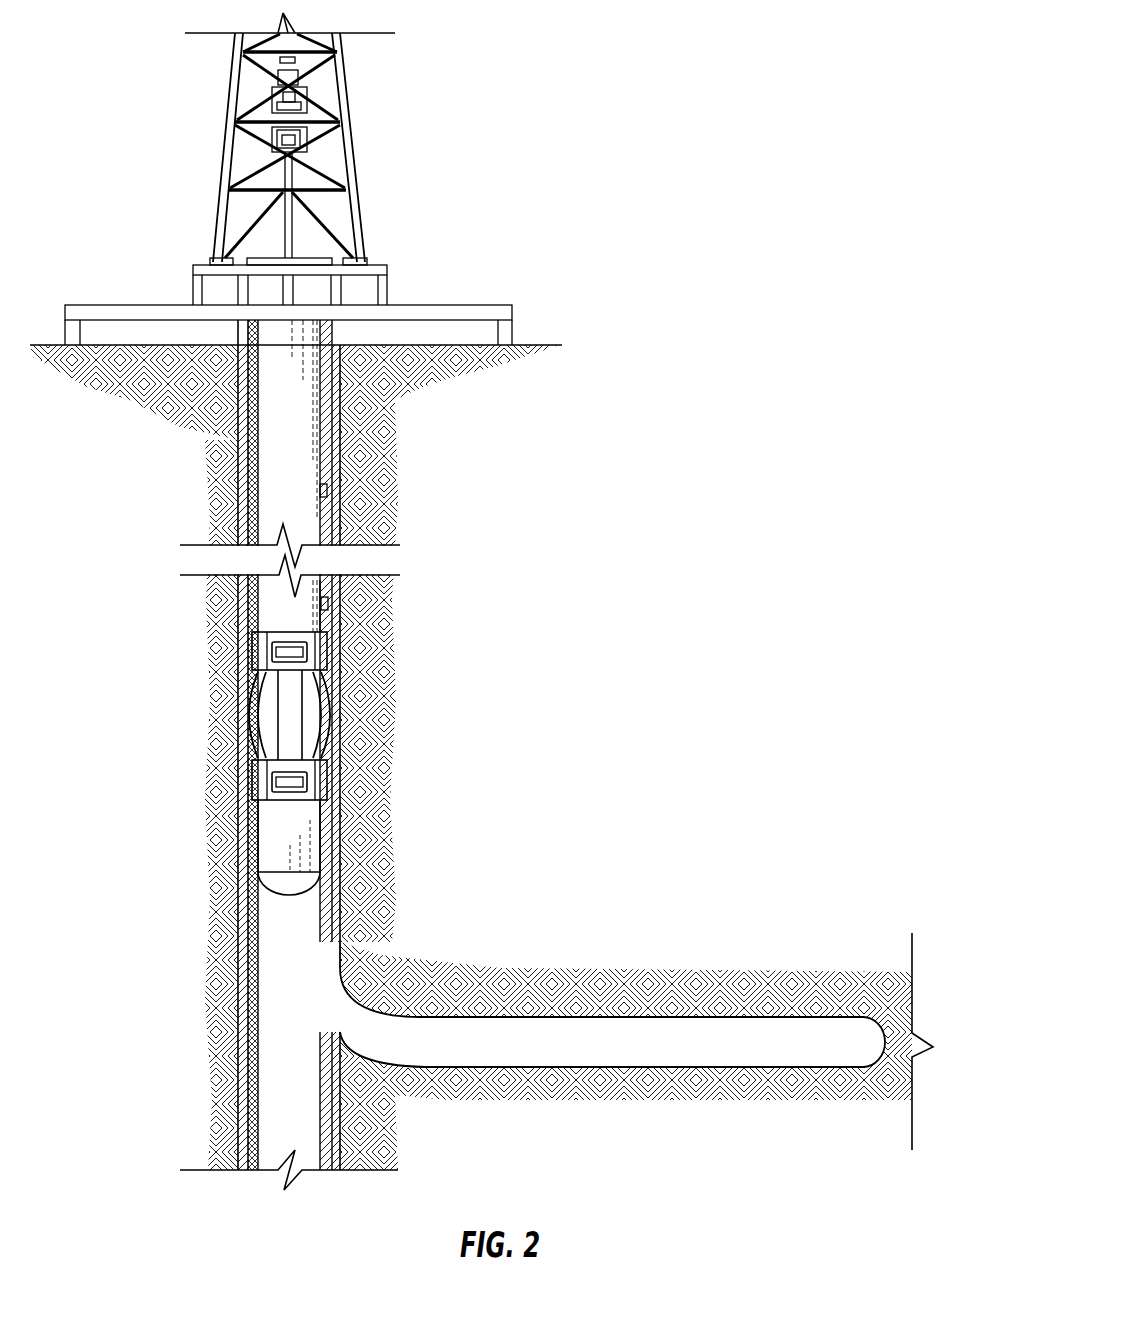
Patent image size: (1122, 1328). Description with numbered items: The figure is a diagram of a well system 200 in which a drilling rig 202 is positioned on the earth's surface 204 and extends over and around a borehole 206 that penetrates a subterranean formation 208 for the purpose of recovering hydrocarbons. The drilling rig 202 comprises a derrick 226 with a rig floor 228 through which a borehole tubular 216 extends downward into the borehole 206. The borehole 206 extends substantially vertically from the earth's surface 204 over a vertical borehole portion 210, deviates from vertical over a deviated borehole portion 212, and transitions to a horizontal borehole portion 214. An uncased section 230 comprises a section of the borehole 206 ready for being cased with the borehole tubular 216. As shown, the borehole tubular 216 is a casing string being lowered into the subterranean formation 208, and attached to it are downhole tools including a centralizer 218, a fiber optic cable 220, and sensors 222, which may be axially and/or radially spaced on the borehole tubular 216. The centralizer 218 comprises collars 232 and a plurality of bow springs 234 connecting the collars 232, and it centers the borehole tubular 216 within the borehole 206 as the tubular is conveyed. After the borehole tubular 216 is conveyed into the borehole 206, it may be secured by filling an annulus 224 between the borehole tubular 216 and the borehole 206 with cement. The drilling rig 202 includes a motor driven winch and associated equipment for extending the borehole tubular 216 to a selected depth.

The well system 200 is at (753, 70).
The drilling rig 202 is at (428, 118).
The earth's surface 204 is at (533, 345).
The borehole 206 is at (247, 500).
The subterranean formation 208 is at (420, 385).
The vertical borehole portion 210 is at (327, 655).
The deviated borehole portion 212 is at (364, 990).
The horizontal borehole portion 214 is at (482, 1068).
The borehole tubular 216 is at (328, 586).
The centralizer 218 is at (253, 682).
The fiber optic cable 220 is at (253, 538).
The sensors 222 is at (328, 490).
The annulus 224 is at (253, 475).
The derrick 226 is at (228, 93).
The rig floor 228 is at (202, 263).
The uncased section 230 is at (593, 1017).
The collars 232 is at (253, 650).
The bow springs 234 is at (253, 747).